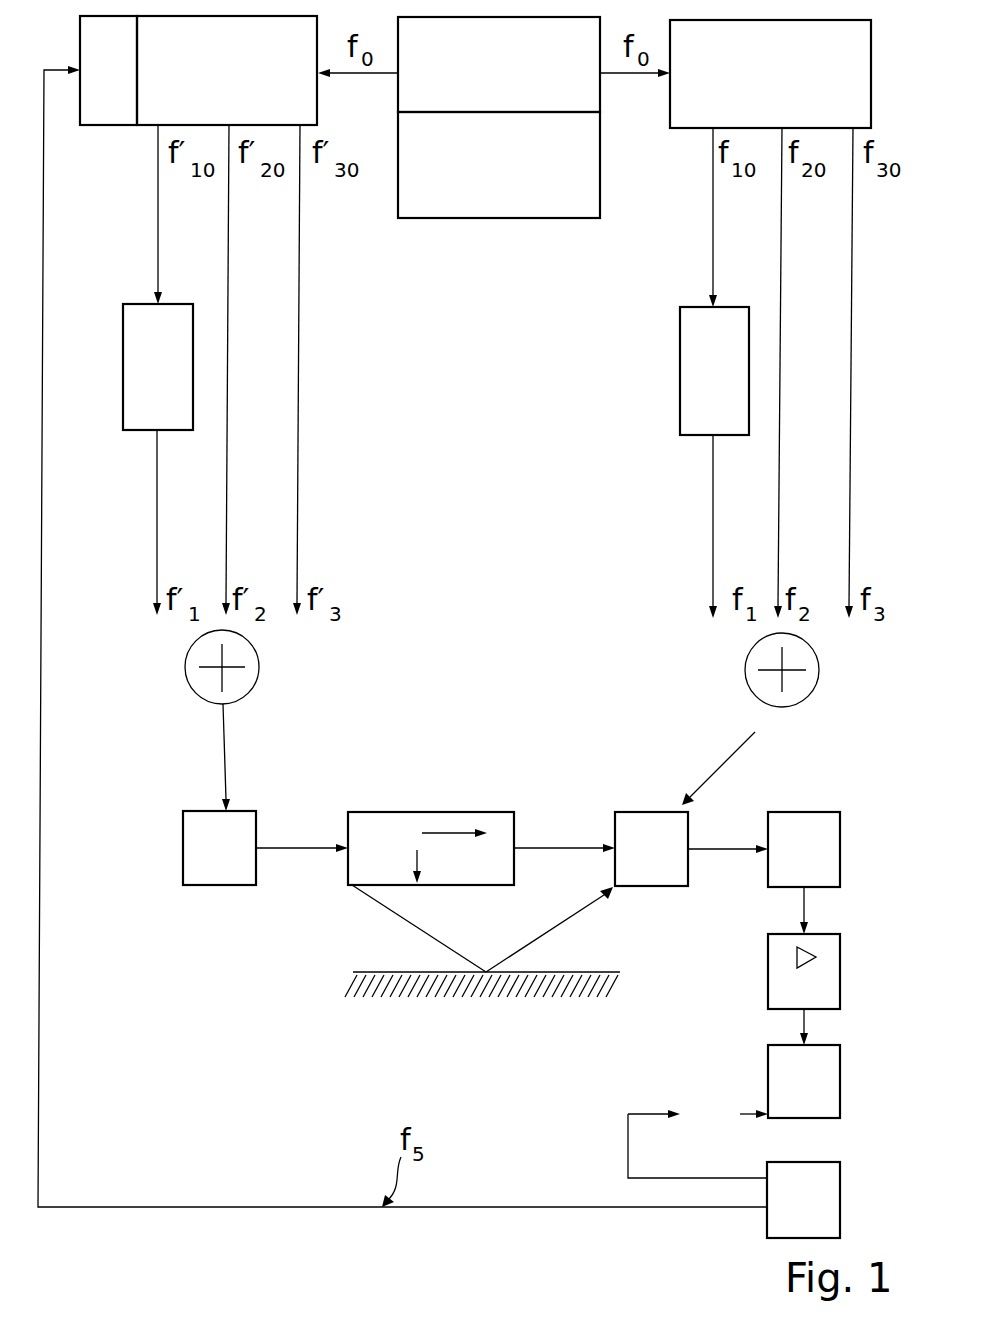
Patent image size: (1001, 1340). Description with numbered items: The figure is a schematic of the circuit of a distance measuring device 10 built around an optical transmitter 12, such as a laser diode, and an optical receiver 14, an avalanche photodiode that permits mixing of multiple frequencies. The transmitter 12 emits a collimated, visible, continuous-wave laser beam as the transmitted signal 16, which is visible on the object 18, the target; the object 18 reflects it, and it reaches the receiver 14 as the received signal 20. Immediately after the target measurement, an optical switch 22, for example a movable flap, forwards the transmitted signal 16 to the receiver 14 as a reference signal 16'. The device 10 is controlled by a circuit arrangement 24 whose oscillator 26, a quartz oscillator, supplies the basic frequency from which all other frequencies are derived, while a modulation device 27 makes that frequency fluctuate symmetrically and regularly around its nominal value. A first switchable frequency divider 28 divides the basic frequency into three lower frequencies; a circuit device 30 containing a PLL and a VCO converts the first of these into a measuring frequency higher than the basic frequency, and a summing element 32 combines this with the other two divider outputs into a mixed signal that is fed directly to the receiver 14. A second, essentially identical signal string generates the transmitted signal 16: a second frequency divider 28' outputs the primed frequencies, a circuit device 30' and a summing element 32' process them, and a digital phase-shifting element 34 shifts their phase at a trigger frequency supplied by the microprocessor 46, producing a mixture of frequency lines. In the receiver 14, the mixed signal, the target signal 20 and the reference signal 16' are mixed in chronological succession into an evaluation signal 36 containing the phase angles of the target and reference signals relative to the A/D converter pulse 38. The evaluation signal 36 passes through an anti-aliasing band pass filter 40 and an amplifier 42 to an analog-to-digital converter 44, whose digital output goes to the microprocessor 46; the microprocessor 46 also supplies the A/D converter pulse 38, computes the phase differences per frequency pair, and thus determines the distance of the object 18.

The distance measuring device 10 is at (234, 1087).
The optical transmitter 12 is at (219, 848).
The optical receiver 14 is at (651, 849).
The transmitted signal 16 is at (378, 928).
The reference signal 16' is at (564, 832).
The object 18 is at (470, 1011).
The received signal 20 is at (594, 931).
The optical switch 22 is at (431, 848).
The circuit arrangement 24 is at (481, 337).
The oscillator 26 is at (499, 165).
The modulation device 27 is at (499, 64).
The first switchable frequency divider 28 is at (770, 74).
The second frequency divider 28' is at (227, 70).
The circuit device 30 is at (714, 371).
The circuit device 30' is at (158, 367).
The summing element 32 is at (733, 685).
The summing element 32' is at (279, 676).
The digital phase-shifting element 34 is at (108, 70).
The evaluation signal 36 is at (728, 831).
The A/D converter pulse 38 is at (698, 1137).
The anti-aliasing filter 40 is at (804, 849).
The amplifier 42 is at (804, 972).
The analog-to-digital converter 44 is at (804, 1082).
The microprocessor 46 is at (803, 1200).